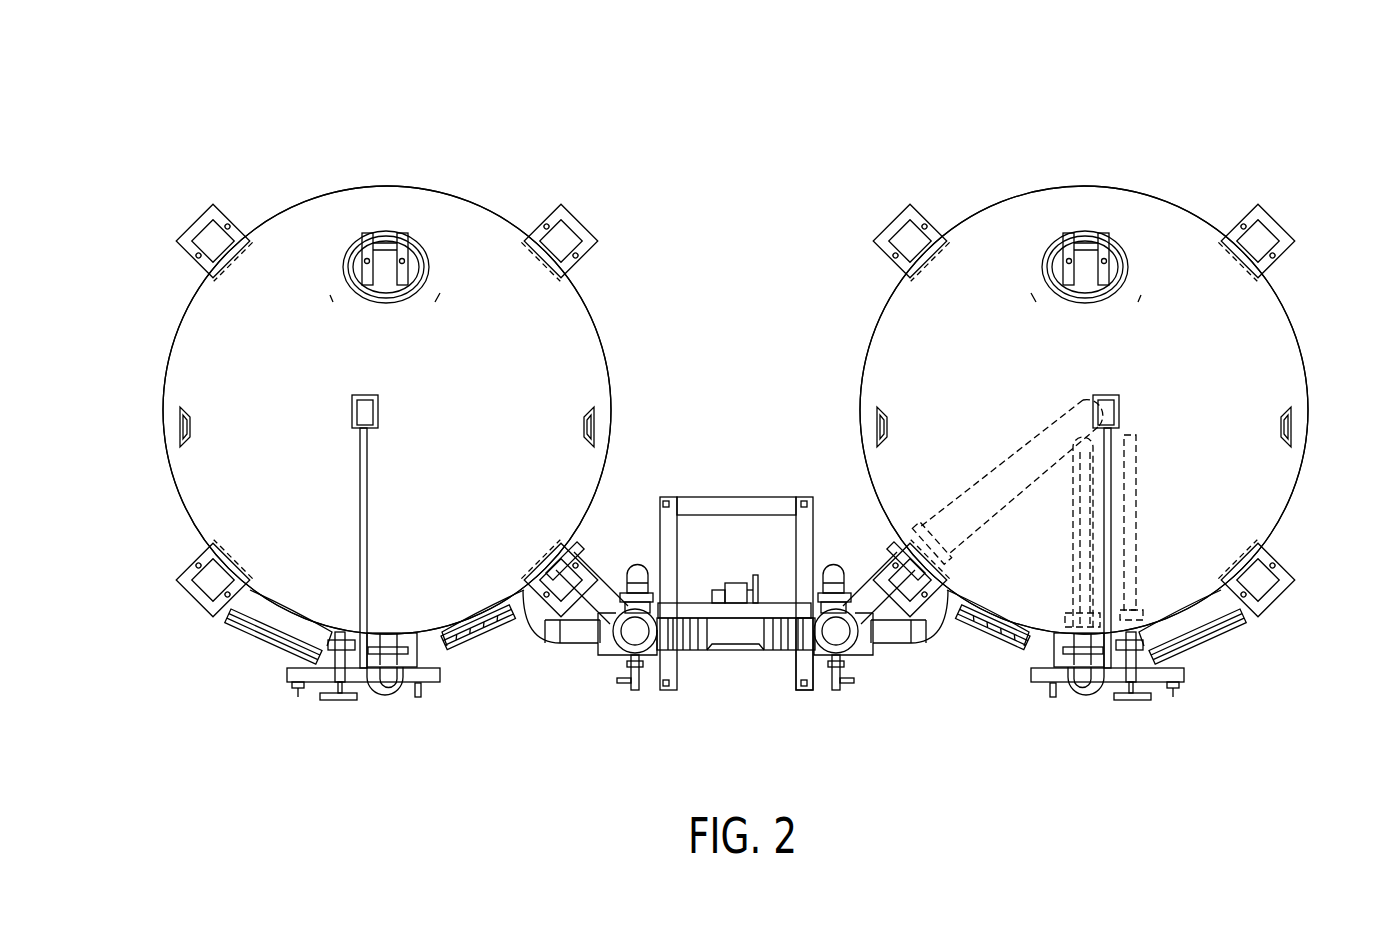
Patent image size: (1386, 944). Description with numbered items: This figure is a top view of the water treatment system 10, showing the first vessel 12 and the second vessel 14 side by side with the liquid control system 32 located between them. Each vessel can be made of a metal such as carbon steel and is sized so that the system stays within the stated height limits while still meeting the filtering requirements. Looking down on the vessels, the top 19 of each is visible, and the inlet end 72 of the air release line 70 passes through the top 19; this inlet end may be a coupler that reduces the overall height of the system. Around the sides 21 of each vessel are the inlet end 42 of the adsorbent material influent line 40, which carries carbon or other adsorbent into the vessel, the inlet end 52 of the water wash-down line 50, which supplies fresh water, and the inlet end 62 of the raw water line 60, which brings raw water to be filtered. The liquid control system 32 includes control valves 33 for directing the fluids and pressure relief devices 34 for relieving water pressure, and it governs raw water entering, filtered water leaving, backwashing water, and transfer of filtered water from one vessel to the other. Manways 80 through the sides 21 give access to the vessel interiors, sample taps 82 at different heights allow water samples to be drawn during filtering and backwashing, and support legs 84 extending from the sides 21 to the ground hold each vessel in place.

The water treatment system 10 is at (1278, 142).
The first vessel 12 is at (498, 208).
The second vessel 14 is at (1203, 212).
The top 19 is at (585, 342).
The sides 21 is at (160, 378).
The liquid control system 32 is at (740, 495).
The control valves 33 is at (803, 690).
The pressure relief devices 34 is at (835, 560).
The adsorbent material influent line 40 is at (385, 697).
The inlet end 42 is at (393, 633).
The water wash-down line 50 is at (342, 700).
The inlet end 52 is at (343, 632).
The raw water line 60 is at (602, 580).
The inlet end 62 is at (562, 565).
The air release line 70 is at (367, 517).
The inlet end 72 is at (380, 408).
The manways 80 is at (388, 248).
The sample taps 82 is at (484, 643).
The support legs 84 is at (209, 204).